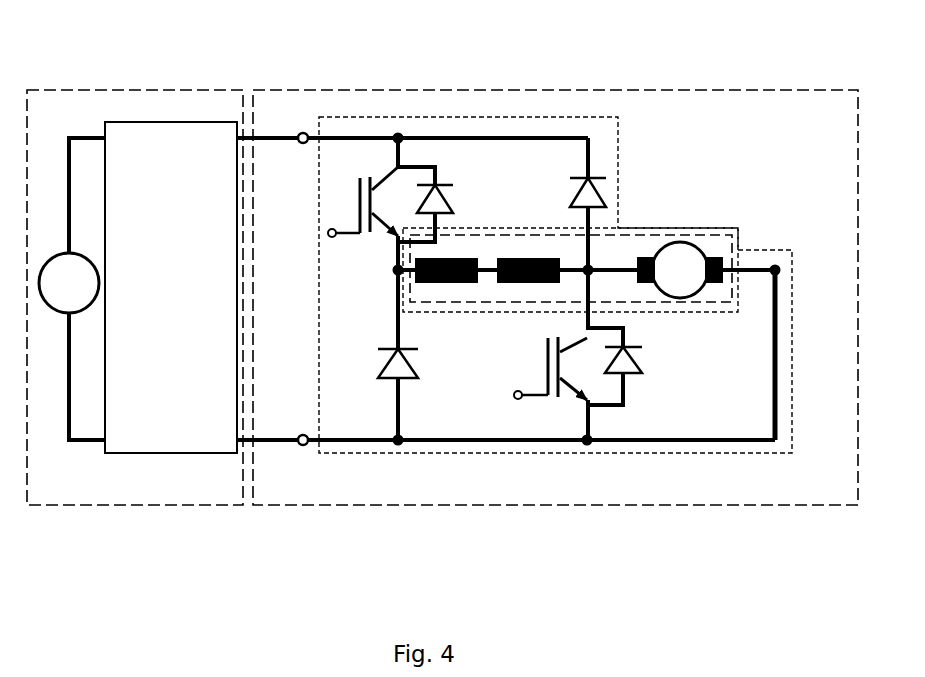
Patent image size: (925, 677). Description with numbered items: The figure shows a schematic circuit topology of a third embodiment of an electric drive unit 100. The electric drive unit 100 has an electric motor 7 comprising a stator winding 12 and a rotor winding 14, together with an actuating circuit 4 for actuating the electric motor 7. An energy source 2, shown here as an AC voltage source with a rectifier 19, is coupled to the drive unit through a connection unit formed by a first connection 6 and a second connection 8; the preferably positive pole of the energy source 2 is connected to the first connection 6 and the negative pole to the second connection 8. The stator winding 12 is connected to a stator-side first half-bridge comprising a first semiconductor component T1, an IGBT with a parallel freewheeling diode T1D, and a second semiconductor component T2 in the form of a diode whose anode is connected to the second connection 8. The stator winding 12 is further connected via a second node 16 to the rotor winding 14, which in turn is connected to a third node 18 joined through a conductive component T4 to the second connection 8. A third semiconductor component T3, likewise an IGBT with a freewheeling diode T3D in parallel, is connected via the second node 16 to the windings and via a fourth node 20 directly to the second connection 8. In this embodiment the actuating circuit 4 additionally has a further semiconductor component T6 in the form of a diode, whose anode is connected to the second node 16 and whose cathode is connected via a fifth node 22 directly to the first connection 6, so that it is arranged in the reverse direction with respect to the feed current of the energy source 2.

The energy source 2 is at (87, 90).
The rectifier 19 is at (160, 122).
The actuating circuit 4 is at (511, 115).
The electric drive unit 100 is at (608, 90).
The first connection 6 is at (303, 132).
The second connection 8 is at (303, 446).
The fifth node 22 is at (398, 133).
The first semiconductor component T1 is at (337, 210).
The freewheeling diode T1D is at (444, 181).
The further semiconductor component T6 is at (559, 179).
The second semiconductor component T2 is at (370, 355).
The third semiconductor component T3 is at (533, 378).
The freewheeling diode T3D is at (648, 360).
The conductive component T4 is at (776, 357).
The stator winding 12 is at (483, 252).
The electric motor 7 is at (700, 234).
The rotor winding 14 is at (651, 243).
The second node 16 is at (587, 266).
The third node 18 is at (777, 270).
The fourth node 20 is at (587, 446).